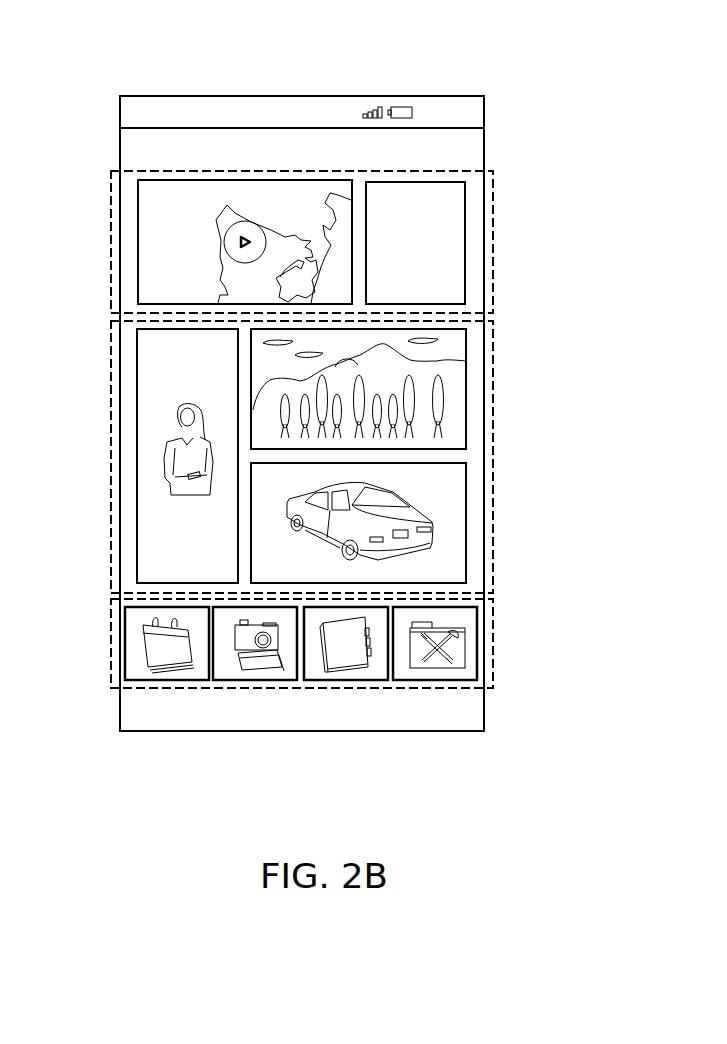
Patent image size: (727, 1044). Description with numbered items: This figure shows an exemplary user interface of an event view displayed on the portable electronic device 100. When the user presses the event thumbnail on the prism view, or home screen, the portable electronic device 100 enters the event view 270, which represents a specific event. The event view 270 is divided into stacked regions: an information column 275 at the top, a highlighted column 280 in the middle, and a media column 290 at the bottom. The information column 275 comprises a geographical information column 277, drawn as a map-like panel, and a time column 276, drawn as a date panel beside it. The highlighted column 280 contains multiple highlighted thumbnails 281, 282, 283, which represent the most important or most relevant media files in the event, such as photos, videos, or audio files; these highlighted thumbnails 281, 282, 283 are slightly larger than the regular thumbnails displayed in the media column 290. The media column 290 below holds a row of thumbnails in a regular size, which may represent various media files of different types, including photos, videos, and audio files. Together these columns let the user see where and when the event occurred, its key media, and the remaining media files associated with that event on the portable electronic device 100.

The portable electronic device 100 is at (496, 59).
The event view 270 is at (571, 192).
The information column 275 is at (493, 202).
The time column 276 is at (466, 240).
The geographical information column 277 is at (137, 241).
The highlighted column 280 is at (493, 455).
The highlighted thumbnail 281 is at (137, 451).
The highlighted thumbnail 282 is at (466, 389).
The highlighted thumbnail 283 is at (466, 523).
The media column 290 is at (493, 641).